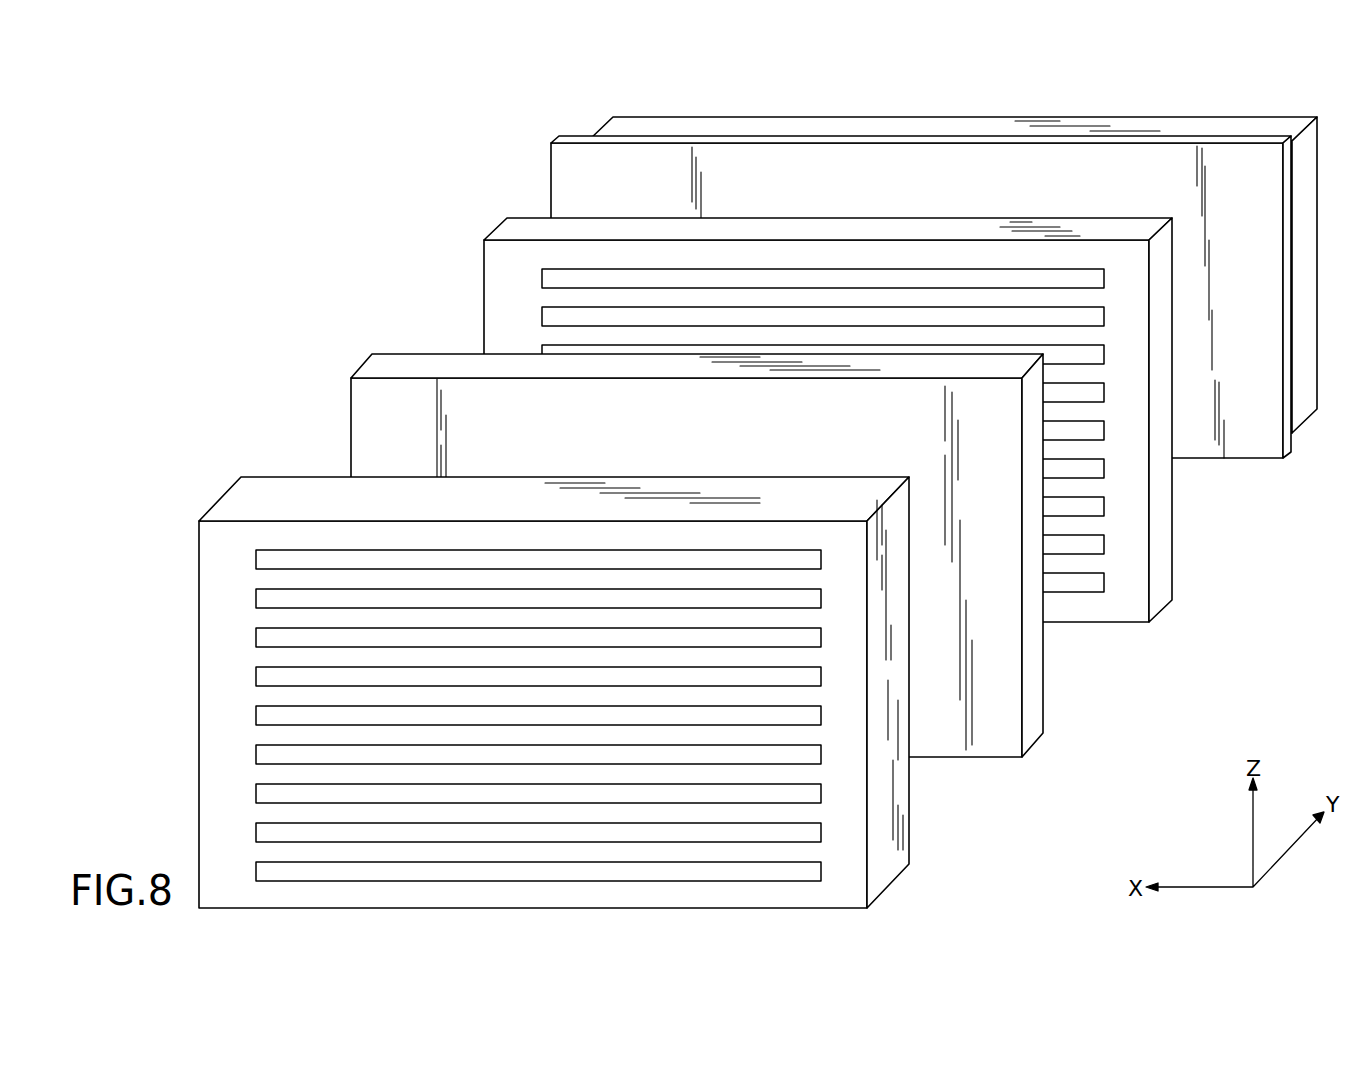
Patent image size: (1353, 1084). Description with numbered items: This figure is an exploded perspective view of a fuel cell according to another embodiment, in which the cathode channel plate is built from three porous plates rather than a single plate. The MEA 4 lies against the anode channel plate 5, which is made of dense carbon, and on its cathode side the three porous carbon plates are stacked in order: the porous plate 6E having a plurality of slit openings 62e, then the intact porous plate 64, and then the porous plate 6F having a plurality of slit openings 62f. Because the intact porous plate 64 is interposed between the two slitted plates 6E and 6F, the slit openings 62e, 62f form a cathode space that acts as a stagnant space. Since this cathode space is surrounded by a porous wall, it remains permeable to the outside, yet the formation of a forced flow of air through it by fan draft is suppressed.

The MEA 4 is at (566, 140).
The anode channel plate 5 is at (620, 127).
The porous plate 6E is at (253, 490).
The porous plate 6F is at (518, 228).
The slit openings 62e is at (262, 640).
The slit openings 62f is at (550, 321).
The intact porous plate 64 is at (383, 366).